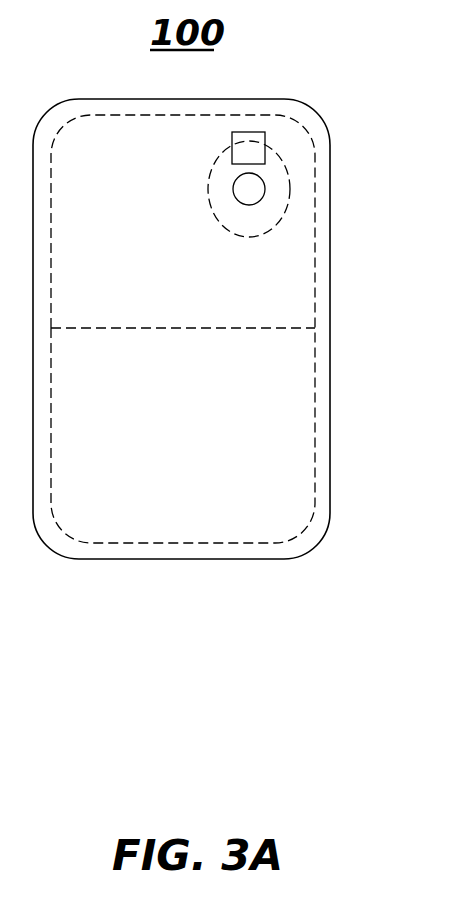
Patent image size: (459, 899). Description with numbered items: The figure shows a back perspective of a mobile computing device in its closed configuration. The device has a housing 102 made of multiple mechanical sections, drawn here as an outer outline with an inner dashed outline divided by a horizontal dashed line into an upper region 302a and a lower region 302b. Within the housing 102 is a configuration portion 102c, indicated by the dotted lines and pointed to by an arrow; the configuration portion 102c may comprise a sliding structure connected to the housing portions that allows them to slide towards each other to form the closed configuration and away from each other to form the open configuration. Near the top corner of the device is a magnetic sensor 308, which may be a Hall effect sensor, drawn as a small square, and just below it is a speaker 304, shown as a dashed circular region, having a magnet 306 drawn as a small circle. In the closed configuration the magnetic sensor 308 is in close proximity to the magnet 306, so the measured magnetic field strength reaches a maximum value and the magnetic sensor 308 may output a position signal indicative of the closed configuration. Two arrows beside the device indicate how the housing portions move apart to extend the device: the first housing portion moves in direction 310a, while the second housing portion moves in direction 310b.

The housing 102 is at (330, 233).
The configuration portion 102c is at (282, 280).
The upper portion of display region 302a is at (315, 181).
The lower portion of display region 302b is at (315, 362).
The speaker 304 is at (208, 182).
The magnet 306 is at (233, 189).
The magnetic sensor 308 is at (265, 147).
The direction 310a is at (444, 263).
The direction 310b is at (444, 575).